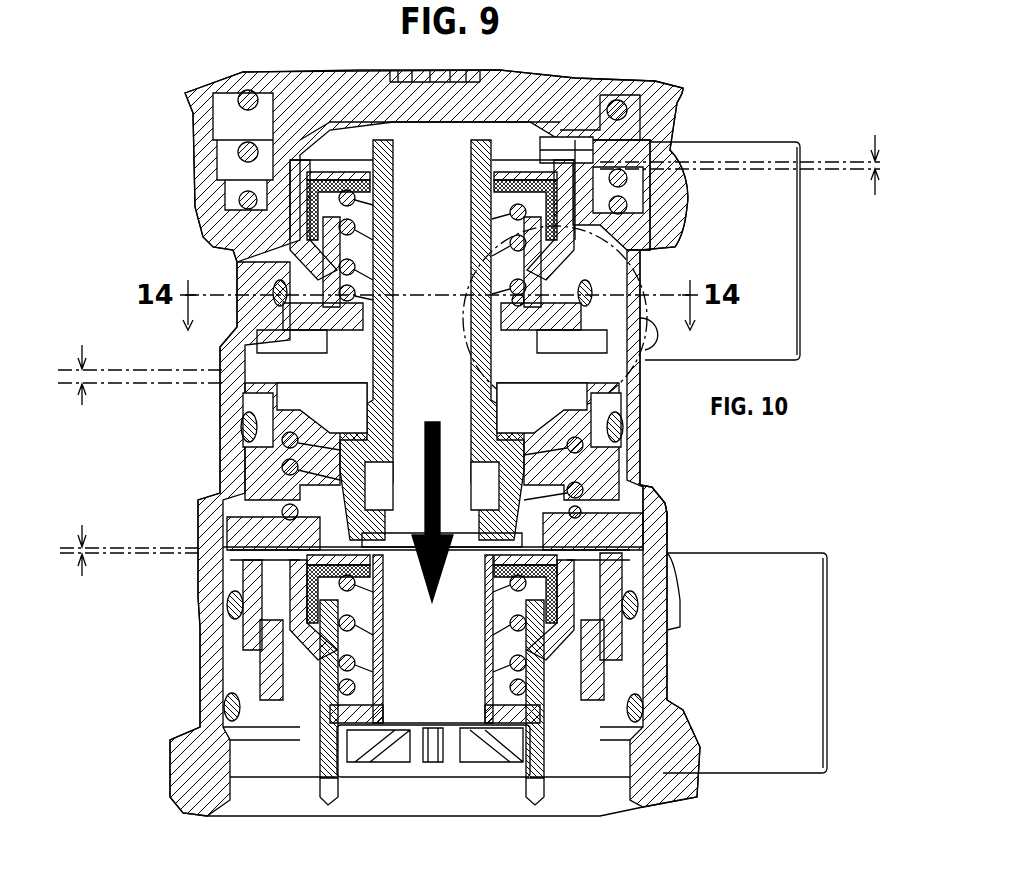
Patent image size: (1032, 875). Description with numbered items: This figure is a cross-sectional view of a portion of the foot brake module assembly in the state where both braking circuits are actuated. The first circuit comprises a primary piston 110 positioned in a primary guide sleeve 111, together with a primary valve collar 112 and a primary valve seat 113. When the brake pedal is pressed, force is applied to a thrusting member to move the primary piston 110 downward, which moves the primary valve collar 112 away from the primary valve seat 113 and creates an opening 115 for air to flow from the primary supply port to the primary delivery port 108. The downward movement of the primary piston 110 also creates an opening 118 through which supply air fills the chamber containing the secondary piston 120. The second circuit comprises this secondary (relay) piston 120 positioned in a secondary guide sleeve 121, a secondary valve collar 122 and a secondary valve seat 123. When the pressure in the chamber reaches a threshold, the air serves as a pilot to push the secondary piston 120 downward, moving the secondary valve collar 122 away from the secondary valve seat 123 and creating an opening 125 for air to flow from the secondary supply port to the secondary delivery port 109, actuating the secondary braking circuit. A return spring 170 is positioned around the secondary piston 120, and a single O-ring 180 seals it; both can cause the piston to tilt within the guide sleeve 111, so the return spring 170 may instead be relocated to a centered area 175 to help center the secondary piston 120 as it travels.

The primary delivery port 108 is at (800, 260).
The secondary delivery port 109 is at (820, 667).
The primary piston 110 is at (518, 88).
The primary guide sleeve 111 is at (640, 337).
The primary valve collar 112 is at (577, 142).
The primary valve seat 113 is at (568, 178).
The opening 115 is at (886, 168).
The opening 118 is at (58, 370).
The secondary piston 120 is at (237, 470).
The secondary guide sleeve 121 is at (570, 748).
The secondary valve collar 122 is at (643, 540).
The secondary valve seat 123 is at (667, 503).
The opening 125 is at (63, 548).
The return spring 170 is at (556, 482).
The centered area 175 is at (427, 708).
The O-ring 180 is at (243, 425).